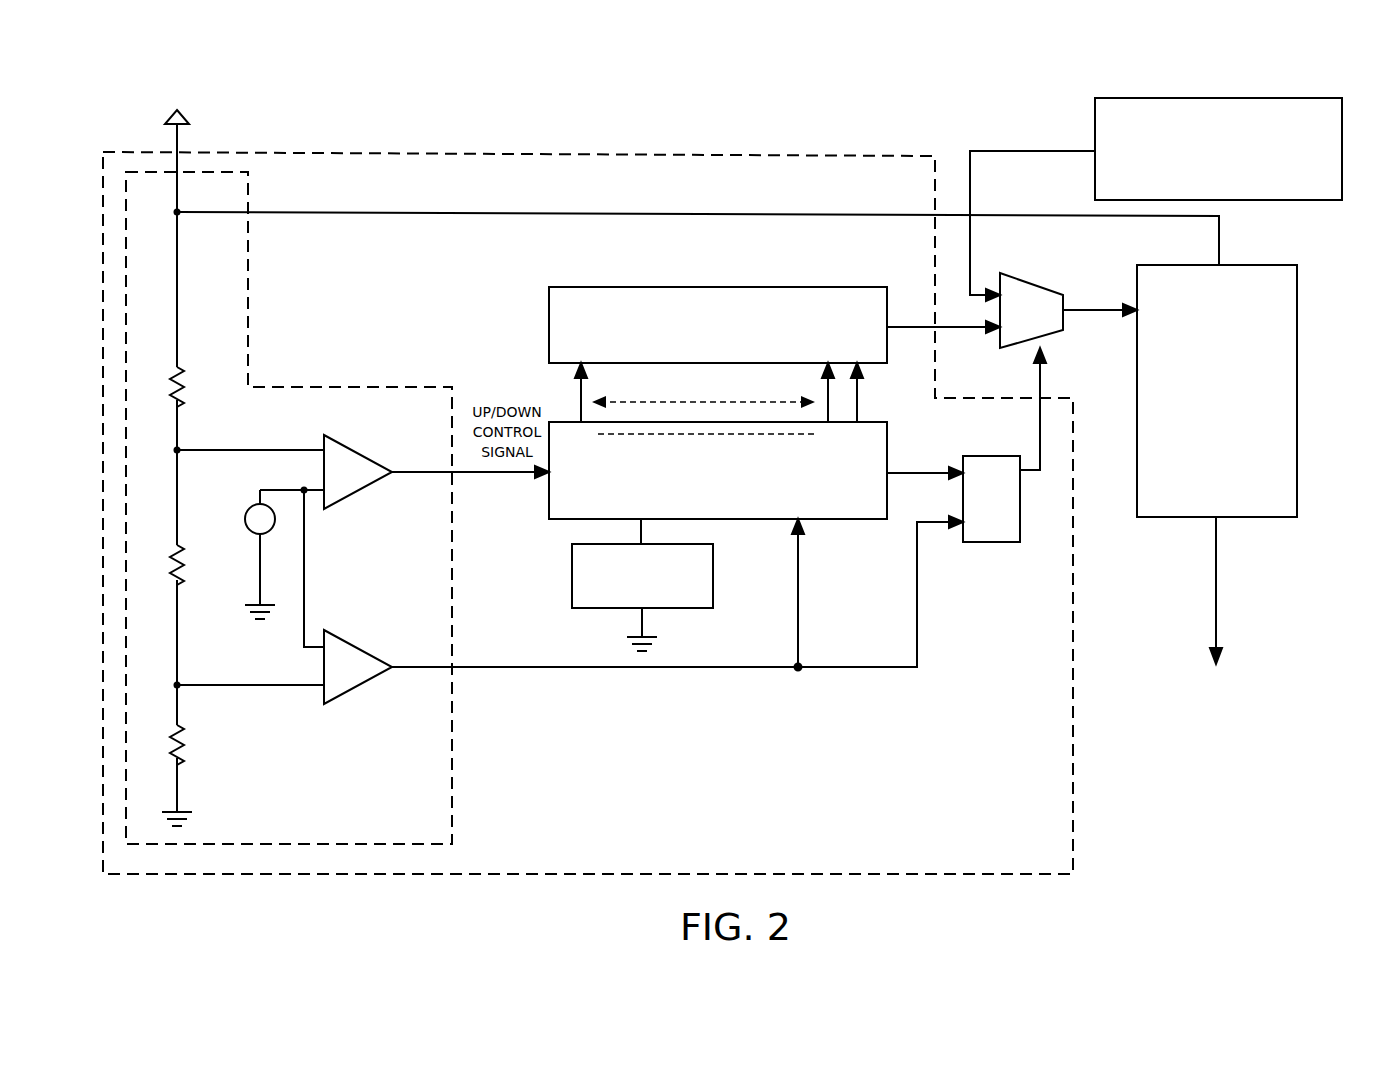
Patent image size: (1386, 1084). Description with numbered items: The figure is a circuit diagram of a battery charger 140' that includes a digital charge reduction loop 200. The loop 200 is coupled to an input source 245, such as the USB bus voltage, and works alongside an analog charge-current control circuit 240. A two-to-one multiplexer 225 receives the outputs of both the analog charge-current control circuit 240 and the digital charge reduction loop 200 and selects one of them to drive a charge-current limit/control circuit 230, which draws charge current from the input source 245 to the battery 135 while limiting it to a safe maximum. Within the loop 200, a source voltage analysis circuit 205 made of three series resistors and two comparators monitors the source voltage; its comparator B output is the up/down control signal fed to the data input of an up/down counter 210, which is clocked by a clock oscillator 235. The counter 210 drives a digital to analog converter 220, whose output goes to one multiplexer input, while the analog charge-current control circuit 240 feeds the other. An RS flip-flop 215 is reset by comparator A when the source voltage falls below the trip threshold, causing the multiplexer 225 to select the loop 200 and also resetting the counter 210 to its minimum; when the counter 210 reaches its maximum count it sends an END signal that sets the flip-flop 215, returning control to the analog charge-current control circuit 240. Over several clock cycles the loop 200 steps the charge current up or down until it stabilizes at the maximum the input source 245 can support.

The input source 245 is at (190, 117).
The source voltage analysis circuit 205 is at (452, 755).
The digital to analog converter 220 is at (855, 287).
The up/down counter 210 is at (837, 519).
The clock oscillator 235 is at (683, 608).
The RS flip-flop 215 is at (990, 542).
The multiplexer 225 is at (1047, 337).
The analog charge-current control circuit 240 is at (1290, 98).
The charge-current limit/control circuit 230 is at (1290, 265).
The battery 135 is at (1220, 697).
The battery charger 140' is at (1221, 845).
The digital charge reduction loop 200 is at (1018, 874).